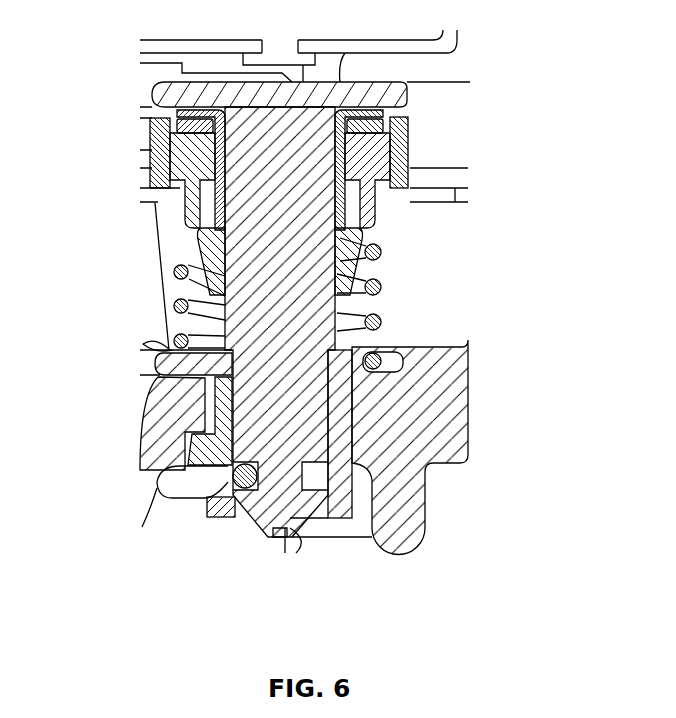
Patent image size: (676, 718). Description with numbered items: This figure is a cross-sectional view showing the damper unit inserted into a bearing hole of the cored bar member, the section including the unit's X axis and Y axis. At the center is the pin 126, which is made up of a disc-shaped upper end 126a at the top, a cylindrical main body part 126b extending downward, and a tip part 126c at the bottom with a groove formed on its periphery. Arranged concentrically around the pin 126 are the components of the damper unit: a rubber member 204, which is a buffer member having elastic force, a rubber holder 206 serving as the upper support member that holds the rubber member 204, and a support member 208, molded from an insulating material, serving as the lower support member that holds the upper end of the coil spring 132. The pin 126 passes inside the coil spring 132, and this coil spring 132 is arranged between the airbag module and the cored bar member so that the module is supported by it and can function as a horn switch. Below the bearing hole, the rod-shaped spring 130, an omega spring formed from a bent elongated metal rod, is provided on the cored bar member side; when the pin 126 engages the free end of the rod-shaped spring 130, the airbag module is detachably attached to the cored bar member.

The pin 126 is at (305, 358).
The disc-shaped upper end 126a is at (150, 92).
The cylindrical main body part 126b is at (338, 304).
The tip part 126c is at (305, 528).
The rod-shaped spring 130 is at (203, 500).
The coil spring 132 is at (153, 306).
The rubber member 204 is at (410, 160).
The rubber holder 206 is at (412, 130).
The support member 208 is at (380, 232).